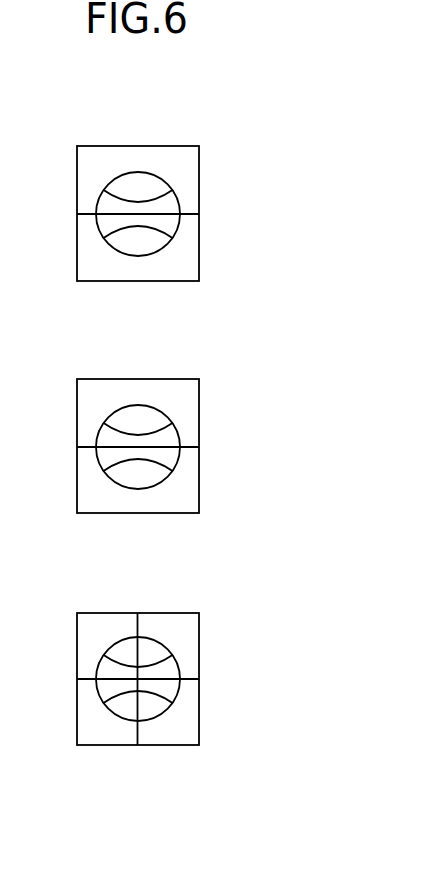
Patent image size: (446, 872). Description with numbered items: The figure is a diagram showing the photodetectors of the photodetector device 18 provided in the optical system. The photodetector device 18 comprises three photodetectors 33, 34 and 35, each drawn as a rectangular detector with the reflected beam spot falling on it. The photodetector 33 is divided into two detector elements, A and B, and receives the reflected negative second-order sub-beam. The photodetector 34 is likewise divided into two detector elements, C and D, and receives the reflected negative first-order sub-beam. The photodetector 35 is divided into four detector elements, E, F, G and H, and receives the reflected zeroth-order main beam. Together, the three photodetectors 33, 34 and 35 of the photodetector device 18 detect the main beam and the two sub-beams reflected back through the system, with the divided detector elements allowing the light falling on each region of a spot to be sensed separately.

The photodetector device 18 is at (142, 143).
The photodetector 33 is at (176, 146).
The photodetector 34 is at (173, 379).
The photodetector 35 is at (174, 613).